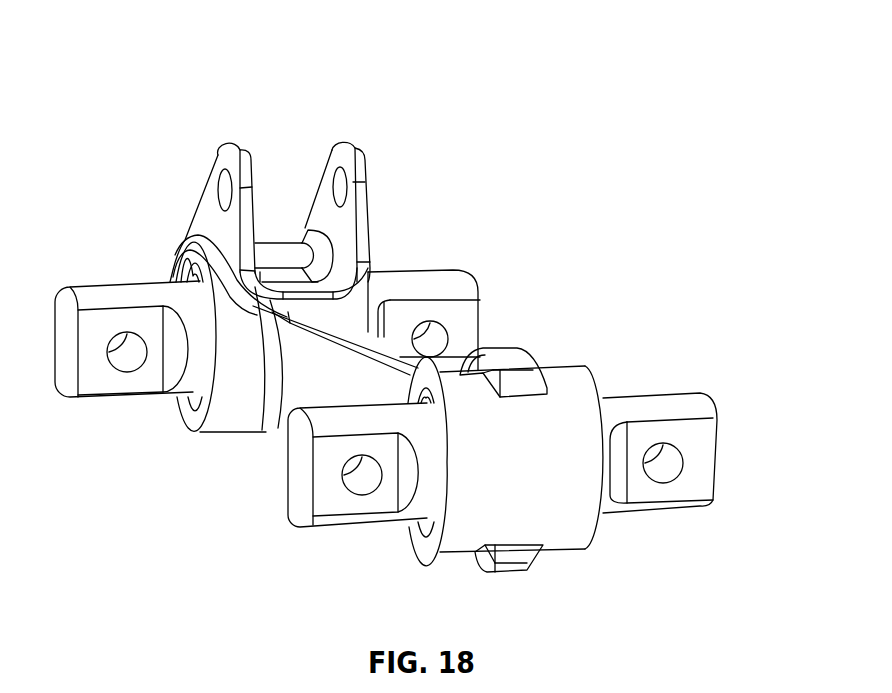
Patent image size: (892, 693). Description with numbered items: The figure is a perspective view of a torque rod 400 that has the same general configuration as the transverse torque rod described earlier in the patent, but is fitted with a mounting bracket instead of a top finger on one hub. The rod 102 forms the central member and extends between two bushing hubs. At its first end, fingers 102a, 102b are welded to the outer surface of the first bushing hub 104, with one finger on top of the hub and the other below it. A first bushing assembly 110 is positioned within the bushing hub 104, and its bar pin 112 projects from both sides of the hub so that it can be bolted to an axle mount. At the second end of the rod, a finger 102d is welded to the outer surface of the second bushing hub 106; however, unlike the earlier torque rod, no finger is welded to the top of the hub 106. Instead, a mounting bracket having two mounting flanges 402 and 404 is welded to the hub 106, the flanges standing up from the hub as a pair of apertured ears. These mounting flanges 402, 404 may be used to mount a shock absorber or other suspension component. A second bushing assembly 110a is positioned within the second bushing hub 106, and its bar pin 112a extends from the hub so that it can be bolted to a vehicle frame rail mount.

The torque rod 400 is at (577, 199).
The mounting flange 402 is at (203, 210).
The mounting flange 404 is at (353, 158).
The first bushing assembly 110 is at (687, 358).
The second bushing assembly 110a is at (428, 248).
The rod 102 is at (357, 340).
The finger 102a is at (513, 358).
The finger 102b is at (533, 568).
The finger 102d is at (255, 440).
The first bushing hub 104 is at (452, 542).
The second bushing hub 106 is at (226, 418).
The bar pin 112 is at (705, 470).
The bar pin 112a is at (455, 275).